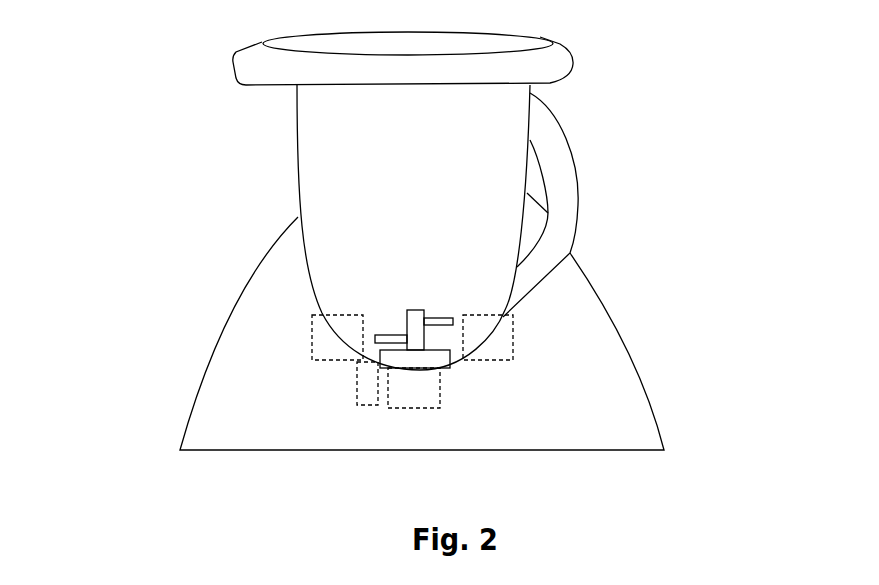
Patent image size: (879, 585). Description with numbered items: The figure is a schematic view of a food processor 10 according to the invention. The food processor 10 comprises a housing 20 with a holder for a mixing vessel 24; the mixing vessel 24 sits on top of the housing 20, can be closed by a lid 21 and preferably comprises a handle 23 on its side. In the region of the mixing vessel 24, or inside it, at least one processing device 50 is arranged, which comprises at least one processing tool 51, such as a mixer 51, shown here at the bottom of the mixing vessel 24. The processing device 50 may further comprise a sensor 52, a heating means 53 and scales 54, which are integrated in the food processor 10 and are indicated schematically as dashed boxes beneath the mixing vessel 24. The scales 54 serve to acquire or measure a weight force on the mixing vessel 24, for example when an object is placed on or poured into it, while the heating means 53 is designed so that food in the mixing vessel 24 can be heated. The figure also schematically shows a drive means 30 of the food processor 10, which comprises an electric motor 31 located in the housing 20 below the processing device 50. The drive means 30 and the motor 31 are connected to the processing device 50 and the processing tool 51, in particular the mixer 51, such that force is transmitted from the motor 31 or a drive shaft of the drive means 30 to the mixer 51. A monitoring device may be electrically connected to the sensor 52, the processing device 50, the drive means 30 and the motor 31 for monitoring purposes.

The food processor 10 is at (160, 130).
The housing 20 is at (205, 363).
The lid 21 is at (525, 40).
The handle 23 is at (570, 197).
The mixing vessel 24 is at (502, 137).
The drive means 30 is at (565, 382).
The motor 31 is at (440, 395).
The processing device 50 is at (279, 310).
The processing tool 51 is at (382, 317).
The sensor 52 is at (313, 343).
The heating means 53 is at (513, 337).
The scales 54 is at (353, 398).